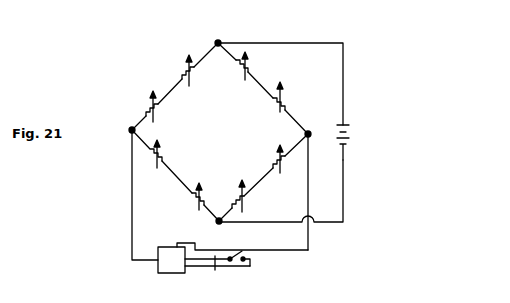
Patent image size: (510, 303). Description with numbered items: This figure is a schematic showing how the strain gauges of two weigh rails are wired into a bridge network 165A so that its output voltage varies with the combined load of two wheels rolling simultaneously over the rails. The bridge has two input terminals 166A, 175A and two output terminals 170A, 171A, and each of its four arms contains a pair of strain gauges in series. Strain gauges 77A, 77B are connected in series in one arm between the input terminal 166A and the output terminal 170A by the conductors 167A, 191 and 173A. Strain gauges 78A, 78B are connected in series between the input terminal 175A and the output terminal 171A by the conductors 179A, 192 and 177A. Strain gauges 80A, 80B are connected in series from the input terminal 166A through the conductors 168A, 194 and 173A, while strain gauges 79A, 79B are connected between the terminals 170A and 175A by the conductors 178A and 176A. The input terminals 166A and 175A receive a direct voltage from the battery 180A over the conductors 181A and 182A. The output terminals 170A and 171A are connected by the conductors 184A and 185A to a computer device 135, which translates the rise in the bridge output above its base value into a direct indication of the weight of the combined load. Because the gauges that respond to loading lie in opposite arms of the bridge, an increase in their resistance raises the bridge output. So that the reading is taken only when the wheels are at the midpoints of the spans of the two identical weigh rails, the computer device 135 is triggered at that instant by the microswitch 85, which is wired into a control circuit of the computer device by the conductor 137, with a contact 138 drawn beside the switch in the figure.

The bridge network 165A is at (114, 191).
The input terminal 166A is at (217, 39).
The conductor 167A is at (208, 53).
The conductor 168A is at (230, 44).
The output terminal 170A is at (131, 130).
The output terminal 171A is at (310, 138).
The conductor 173A is at (147, 113).
The input terminal 175A is at (200, 214).
The conductor 176A is at (208, 229).
The conductor 177A is at (235, 207).
The conductor 178A is at (143, 146).
The conductor 179A is at (297, 145).
The battery 180A is at (359, 133).
The conductor 181A is at (297, 43).
The conductor 182A is at (343, 217).
The conductor 184A is at (130, 232).
The conductor 185A is at (311, 243).
The conductor 191 is at (201, 83).
The conductor 192 is at (284, 180).
The conductor 194 is at (262, 86).
The strain gauge 77A is at (226, 106).
The strain gauge 77B is at (189, 72).
The strain gauge 78A is at (248, 198).
The strain gauge 78B is at (276, 165).
The strain gauge 79A is at (180, 180).
The strain gauge 79B is at (209, 202).
The strain gauge 80A is at (252, 63).
The strain gauge 80B is at (286, 92).
The microswitch 85 is at (234, 256).
The computer device 135 is at (173, 263).
The conductor 137 is at (218, 265).
The switch contact 138 is at (237, 265).